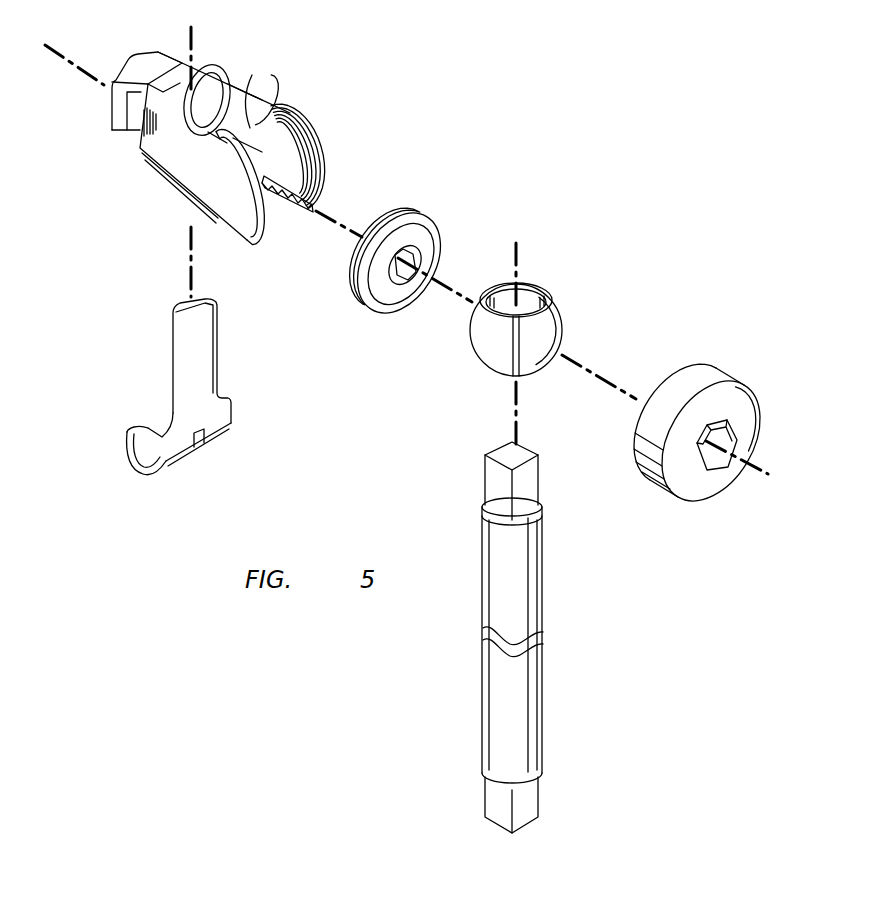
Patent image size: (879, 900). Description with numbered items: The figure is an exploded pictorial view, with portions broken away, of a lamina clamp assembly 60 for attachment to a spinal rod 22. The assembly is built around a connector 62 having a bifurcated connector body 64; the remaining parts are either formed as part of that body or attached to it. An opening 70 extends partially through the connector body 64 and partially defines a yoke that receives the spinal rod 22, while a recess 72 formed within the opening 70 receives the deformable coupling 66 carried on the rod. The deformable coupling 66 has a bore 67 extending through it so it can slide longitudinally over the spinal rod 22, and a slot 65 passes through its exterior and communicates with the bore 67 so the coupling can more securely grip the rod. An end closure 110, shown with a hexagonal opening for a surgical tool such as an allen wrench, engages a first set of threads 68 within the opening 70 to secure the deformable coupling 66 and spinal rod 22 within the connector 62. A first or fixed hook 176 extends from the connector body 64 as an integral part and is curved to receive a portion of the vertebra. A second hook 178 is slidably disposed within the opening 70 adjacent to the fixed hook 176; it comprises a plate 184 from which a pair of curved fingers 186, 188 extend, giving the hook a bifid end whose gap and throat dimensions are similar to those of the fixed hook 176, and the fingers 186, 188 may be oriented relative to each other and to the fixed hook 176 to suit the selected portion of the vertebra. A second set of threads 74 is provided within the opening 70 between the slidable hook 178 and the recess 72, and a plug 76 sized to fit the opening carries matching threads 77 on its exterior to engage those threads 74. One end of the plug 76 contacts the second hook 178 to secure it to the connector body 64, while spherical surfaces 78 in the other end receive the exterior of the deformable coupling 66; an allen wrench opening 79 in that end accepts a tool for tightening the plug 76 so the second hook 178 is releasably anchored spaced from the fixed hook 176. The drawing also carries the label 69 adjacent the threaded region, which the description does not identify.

The spinal rod 22 is at (543, 737).
The lamina clamp assembly 60 is at (388, 68).
The connector 62 is at (213, 162).
The bifurcated connector body 64 is at (320, 148).
The slot 65 is at (520, 343).
The deformable coupling 66 is at (544, 329).
The bore 67 is at (530, 297).
The first set of threads 68 is at (313, 190).
The threads 69 is at (320, 163).
The opening 70 is at (268, 226).
The recess 72 is at (247, 123).
The second set of threads 74 is at (205, 86).
The plug 76 is at (424, 246).
The matching threads 77 is at (420, 210).
The spherical surfaces 78 is at (404, 281).
The allen wrench opening 79 is at (420, 265).
The end closure 110 is at (725, 488).
The first or fixed hook 176 is at (117, 103).
The second hook 178 is at (180, 406).
The plate 184 is at (210, 352).
The curved finger 186 is at (138, 467).
The curved finger 188 is at (228, 432).